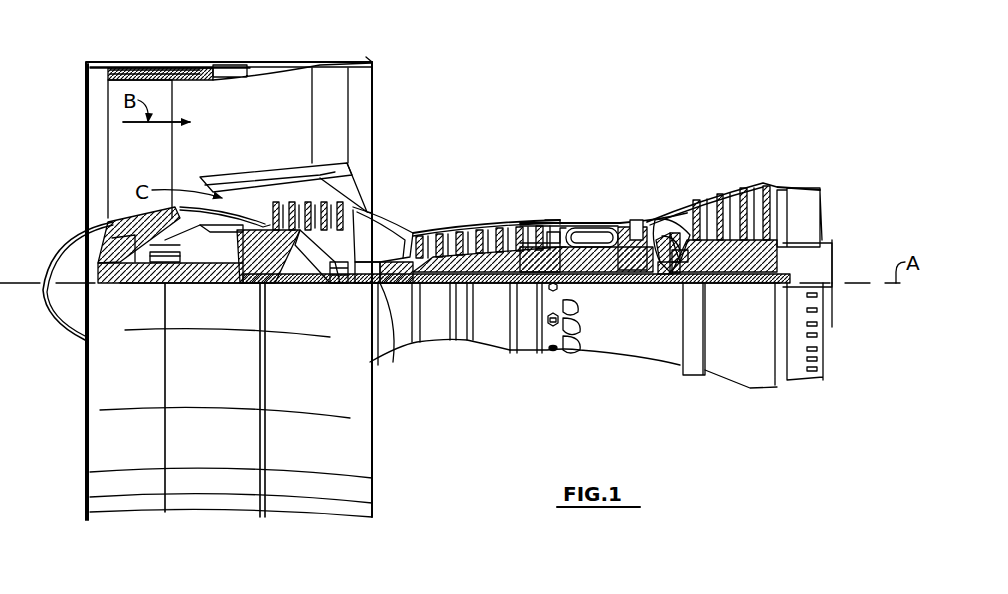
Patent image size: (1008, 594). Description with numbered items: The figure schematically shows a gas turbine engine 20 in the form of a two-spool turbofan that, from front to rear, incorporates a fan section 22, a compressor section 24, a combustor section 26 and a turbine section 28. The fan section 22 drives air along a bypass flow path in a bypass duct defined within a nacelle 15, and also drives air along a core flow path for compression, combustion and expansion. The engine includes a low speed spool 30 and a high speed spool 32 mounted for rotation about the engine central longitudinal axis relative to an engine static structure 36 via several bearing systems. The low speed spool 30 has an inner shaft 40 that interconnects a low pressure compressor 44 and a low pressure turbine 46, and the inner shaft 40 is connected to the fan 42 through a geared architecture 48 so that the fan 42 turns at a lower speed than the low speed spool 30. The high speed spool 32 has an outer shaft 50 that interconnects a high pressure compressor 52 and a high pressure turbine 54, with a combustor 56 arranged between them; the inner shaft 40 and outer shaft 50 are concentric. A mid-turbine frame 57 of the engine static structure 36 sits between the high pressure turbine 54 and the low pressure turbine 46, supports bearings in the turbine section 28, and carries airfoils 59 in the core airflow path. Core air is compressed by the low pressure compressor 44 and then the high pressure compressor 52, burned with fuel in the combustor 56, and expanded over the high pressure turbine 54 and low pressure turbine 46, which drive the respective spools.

The gas turbine engine 20 is at (590, 100).
The nacelle 15 is at (230, 64).
The fan section 22 is at (172, 58).
The fan 42 is at (158, 162).
The low pressure compressor 44 is at (343, 180).
The compressor section 24 is at (408, 210).
The combustor section 26 is at (582, 202).
The turbine section 28 is at (700, 172).
The mid-turbine frame 57 is at (670, 210).
The low pressure turbine 46 is at (737, 190).
The high pressure compressor 52 is at (477, 250).
The high speed spool 32 is at (527, 232).
The combustor 56 is at (585, 238).
The high pressure turbine 54 is at (633, 218).
The airfoils 59 is at (692, 253).
The geared architecture 48 is at (233, 268).
The outer shaft 50 is at (586, 283).
The inner shaft 40 is at (412, 338).
The low speed spool 30 is at (492, 290).
The engine static structure 36 is at (523, 352).